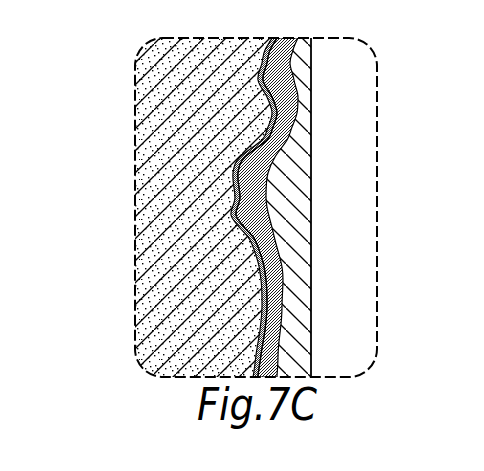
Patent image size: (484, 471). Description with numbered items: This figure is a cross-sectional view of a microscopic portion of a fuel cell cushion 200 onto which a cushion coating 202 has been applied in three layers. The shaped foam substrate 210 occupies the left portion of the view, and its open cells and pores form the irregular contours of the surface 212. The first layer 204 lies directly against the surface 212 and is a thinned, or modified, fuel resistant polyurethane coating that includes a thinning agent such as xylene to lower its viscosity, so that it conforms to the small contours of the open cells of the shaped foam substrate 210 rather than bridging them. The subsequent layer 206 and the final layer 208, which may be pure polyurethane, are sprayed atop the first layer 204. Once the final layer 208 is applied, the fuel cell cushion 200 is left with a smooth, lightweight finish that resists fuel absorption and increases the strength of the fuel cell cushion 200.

The fuel cell cushion 200 is at (110, 156).
The cushion coating 202 is at (320, 198).
The layer 204 is at (287, 154).
The layer 206 is at (268, 222).
The layer 208 is at (311, 268).
The shaped foam substrate 210 is at (148, 228).
The surface 212 is at (260, 278).